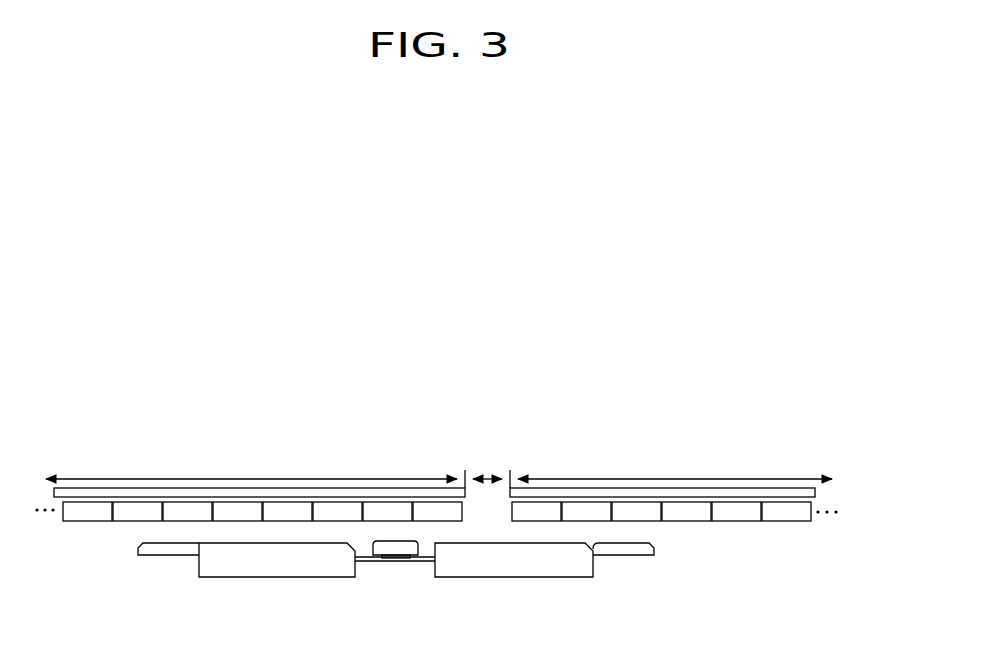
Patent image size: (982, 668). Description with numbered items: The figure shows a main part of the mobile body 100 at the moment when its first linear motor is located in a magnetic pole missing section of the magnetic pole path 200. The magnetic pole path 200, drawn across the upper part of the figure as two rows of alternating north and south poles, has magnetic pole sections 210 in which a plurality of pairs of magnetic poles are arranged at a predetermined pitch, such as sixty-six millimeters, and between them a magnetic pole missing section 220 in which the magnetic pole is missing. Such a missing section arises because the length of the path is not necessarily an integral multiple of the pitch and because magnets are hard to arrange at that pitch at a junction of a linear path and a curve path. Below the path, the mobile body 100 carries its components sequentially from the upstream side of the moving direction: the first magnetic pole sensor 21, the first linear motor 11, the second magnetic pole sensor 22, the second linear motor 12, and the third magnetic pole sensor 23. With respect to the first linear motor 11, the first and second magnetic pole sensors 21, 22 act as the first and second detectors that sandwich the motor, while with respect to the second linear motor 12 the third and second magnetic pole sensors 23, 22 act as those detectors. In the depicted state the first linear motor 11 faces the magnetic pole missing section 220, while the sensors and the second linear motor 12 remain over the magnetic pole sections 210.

The mobile body 100 is at (692, 558).
The first linear motor 11 is at (513, 578).
The second linear motor 12 is at (284, 578).
The first magnetic pole sensor 21 is at (625, 558).
The second magnetic pole sensor 22 is at (418, 562).
The third magnetic pole sensor 23 is at (164, 558).
The magnetic pole path 200 is at (792, 426).
The magnetic pole section 210 is at (272, 478).
The magnetic pole missing section 220 is at (486, 470).